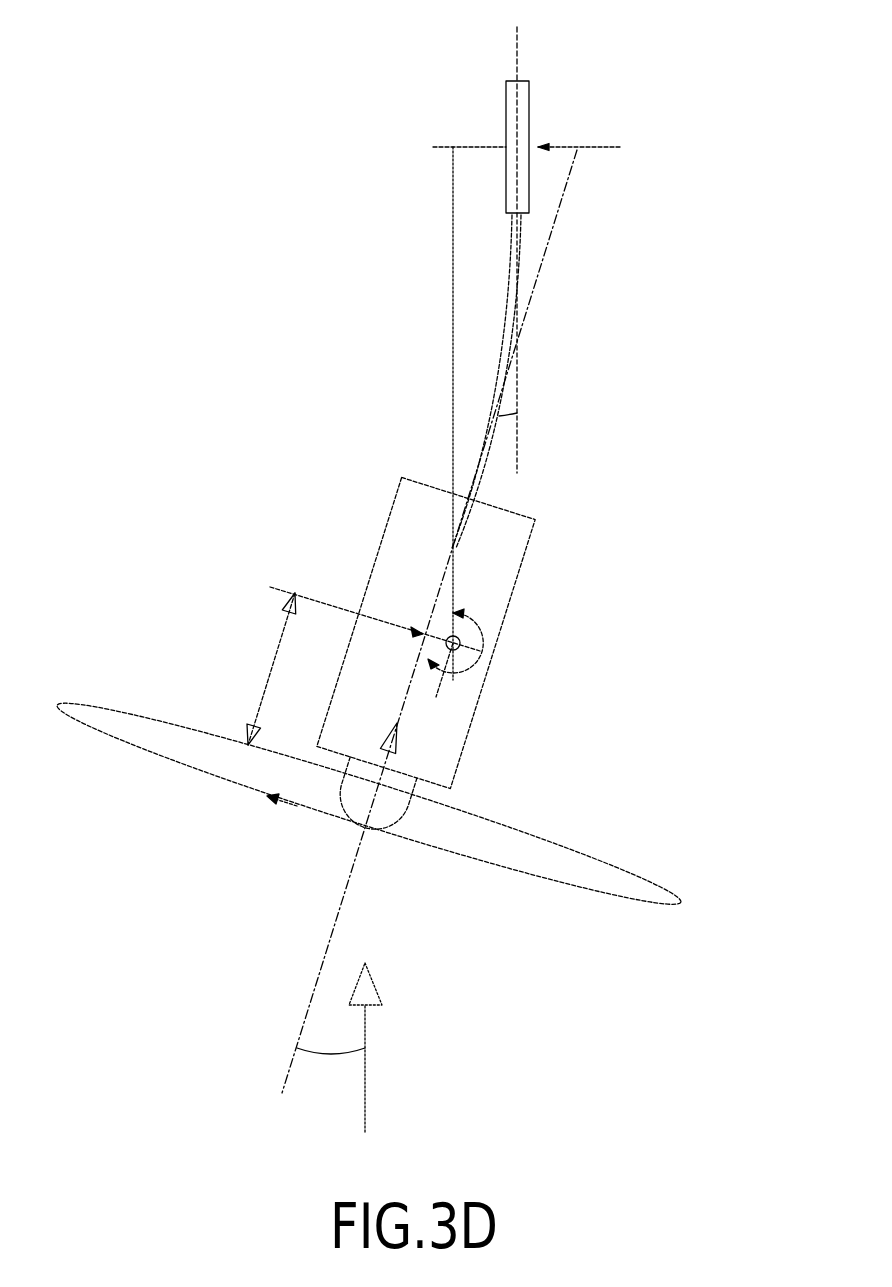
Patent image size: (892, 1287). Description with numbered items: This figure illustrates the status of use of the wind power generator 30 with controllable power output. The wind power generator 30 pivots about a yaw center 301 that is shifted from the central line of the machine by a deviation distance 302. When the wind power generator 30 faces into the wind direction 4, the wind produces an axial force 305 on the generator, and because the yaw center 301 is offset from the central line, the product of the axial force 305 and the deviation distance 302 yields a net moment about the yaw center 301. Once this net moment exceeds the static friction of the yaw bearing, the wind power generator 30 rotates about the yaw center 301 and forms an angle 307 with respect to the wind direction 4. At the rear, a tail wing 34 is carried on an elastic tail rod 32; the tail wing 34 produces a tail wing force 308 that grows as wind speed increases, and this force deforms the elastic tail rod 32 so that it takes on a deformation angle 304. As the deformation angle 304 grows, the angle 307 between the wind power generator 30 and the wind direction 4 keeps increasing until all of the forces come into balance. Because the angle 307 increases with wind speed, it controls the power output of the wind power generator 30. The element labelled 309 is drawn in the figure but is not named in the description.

The wind power generator 30 is at (495, 655).
The elastic tail rod 32 is at (516, 340).
The tail wing 34 is at (530, 120).
The yaw center 301 is at (450, 637).
The deviation distance 302 is at (430, 680).
The deformation angle 304 is at (500, 437).
The axial force 305 is at (380, 758).
The angle 307 is at (330, 1055).
The tail wing force 308 is at (580, 152).
The wing 309 is at (317, 813).
The wind direction 4 is at (368, 1072).